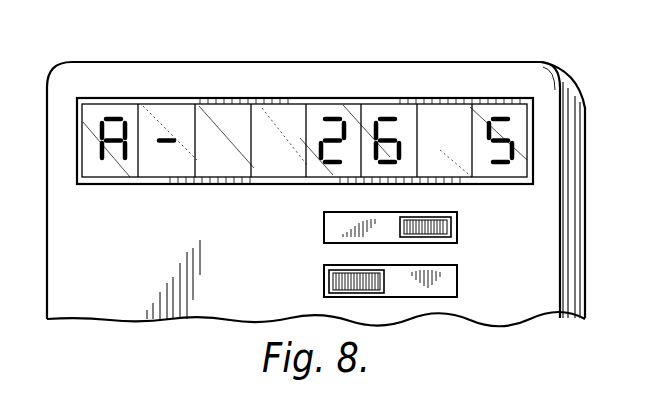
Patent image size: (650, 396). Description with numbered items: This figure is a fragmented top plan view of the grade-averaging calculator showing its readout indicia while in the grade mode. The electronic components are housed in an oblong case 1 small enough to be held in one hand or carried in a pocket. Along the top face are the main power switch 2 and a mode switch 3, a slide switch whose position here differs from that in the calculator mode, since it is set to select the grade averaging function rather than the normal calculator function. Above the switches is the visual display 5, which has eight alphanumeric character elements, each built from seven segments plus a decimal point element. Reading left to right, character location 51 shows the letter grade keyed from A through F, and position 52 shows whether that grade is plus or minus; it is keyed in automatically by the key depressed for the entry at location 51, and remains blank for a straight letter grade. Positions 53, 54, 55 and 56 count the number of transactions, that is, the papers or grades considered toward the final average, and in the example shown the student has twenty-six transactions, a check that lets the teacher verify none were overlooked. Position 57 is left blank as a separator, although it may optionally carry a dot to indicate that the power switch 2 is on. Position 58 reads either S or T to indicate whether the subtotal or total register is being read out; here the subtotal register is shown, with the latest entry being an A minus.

The oblong case 1 is at (433, 62).
The main power switch 2 is at (373, 246).
The mode switch 3 is at (398, 263).
The visual display 5 is at (222, 99).
The character location 51 is at (113, 165).
The character position 52 is at (181, 165).
The display position 53 is at (242, 165).
The display position 54 is at (299, 165).
The display position 55 is at (347, 165).
The display position 56 is at (403, 165).
The separator position 57 is at (457, 165).
The register indicator position 58 is at (518, 165).